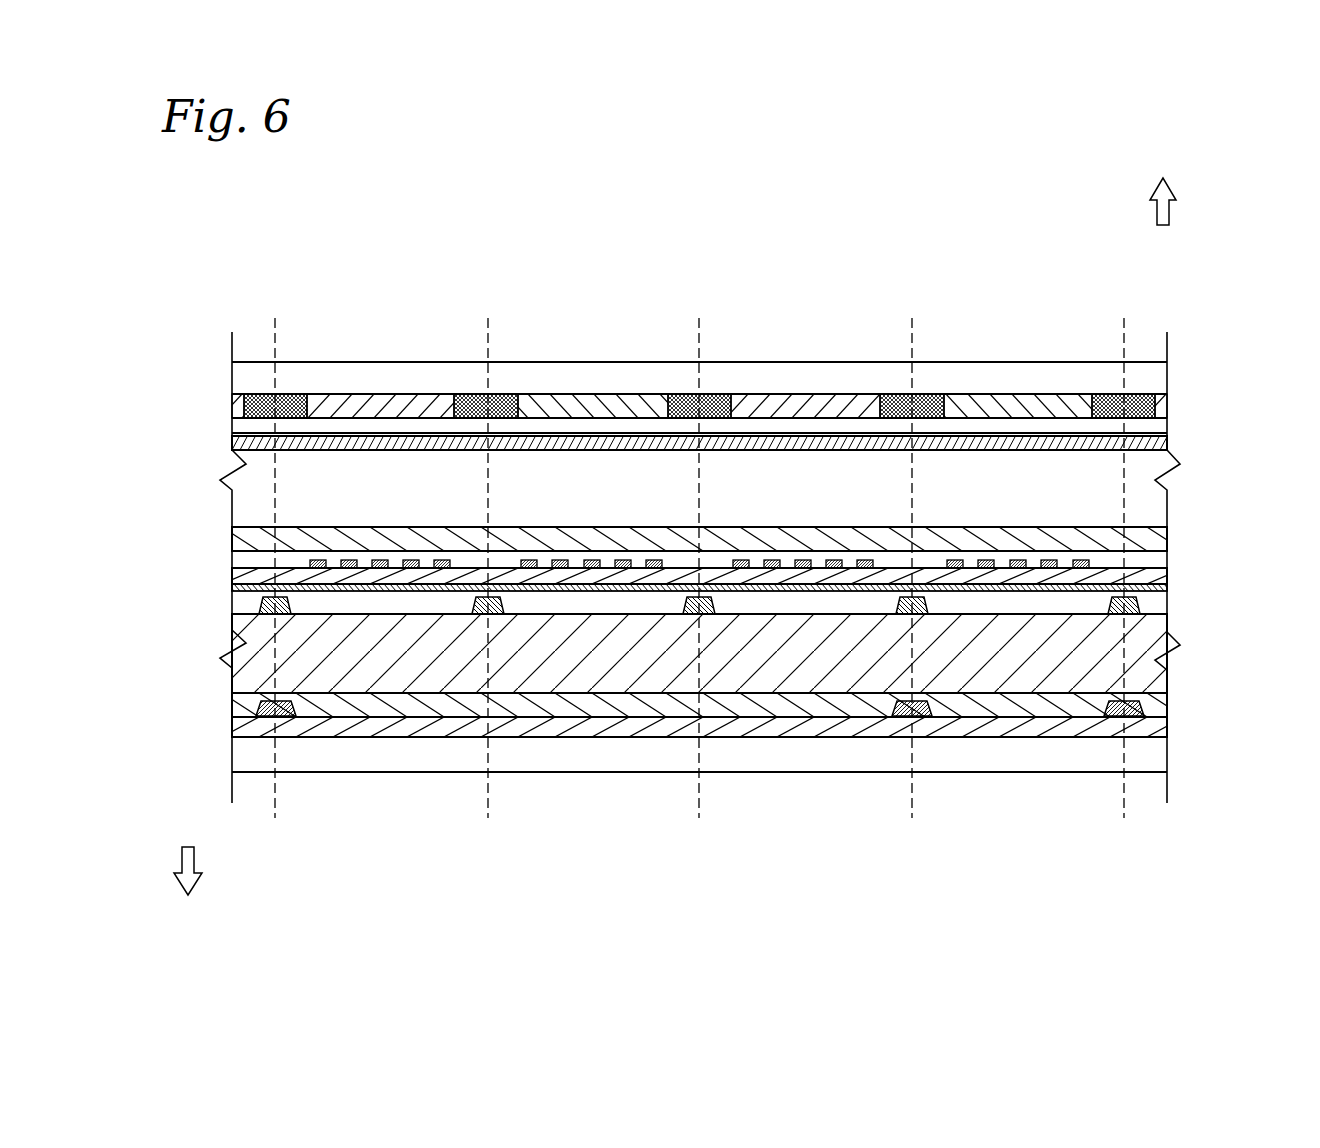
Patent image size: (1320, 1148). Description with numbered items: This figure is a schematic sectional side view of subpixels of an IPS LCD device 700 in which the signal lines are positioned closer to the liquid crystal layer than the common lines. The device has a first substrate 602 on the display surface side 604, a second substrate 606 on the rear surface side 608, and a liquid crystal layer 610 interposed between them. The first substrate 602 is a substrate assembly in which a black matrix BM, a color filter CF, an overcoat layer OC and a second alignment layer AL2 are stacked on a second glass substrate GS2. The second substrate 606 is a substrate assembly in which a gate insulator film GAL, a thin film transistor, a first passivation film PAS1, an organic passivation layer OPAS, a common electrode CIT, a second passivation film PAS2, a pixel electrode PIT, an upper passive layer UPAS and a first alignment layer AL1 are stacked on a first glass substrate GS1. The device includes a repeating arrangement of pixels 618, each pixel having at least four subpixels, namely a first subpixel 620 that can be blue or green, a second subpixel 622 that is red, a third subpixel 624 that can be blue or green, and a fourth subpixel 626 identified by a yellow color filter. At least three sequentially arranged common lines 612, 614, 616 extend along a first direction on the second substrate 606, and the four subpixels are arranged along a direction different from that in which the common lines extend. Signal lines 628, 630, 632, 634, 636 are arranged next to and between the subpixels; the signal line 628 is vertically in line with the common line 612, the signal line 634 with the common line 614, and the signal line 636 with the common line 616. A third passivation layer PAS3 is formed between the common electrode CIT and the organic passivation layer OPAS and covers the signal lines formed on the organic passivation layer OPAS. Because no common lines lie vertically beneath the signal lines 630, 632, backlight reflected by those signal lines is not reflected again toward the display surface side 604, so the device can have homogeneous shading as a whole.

The LCD device 700 is at (249, 274).
The pixel 618 is at (275, 228).
The first subpixel 620 is at (275, 293).
The second subpixel 622 is at (488, 293).
The third subpixel 624 is at (699, 293).
The fourth subpixel 626 is at (912, 293).
The display surface side 604 is at (1168, 213).
The rear surface side 608 is at (195, 852).
The first substrate 602 is at (699, 395).
The liquid crystal layer 610 is at (212, 450).
The second substrate 606 is at (706, 669).
The common line 612 is at (297, 705).
The common line 614 is at (894, 708).
The common line 616 is at (1105, 708).
The signal line 628 is at (292, 600).
The signal line 630 is at (503, 600).
The signal line 632 is at (685, 598).
The signal line 634 is at (897, 598).
The signal line 636 is at (1108, 598).
The black matrix BM is at (289, 393).
The color filter CF is at (390, 400).
The second glass substrate GS2 is at (1157, 382).
The overcoat layer OC is at (1157, 428).
The second alignment layer AL2 is at (1157, 440).
The first alignment layer AL1 is at (1150, 540).
The upper passive layer UPAS is at (1157, 561).
The pixel electrode PIT is at (325, 560).
The common electrode CIT is at (468, 582).
The second passivation film PAS2 is at (1152, 577).
The third passivation layer PAS3 is at (1157, 600).
The organic passivation layer OPAS is at (1160, 675).
The first passivation film PAS1 is at (1152, 710).
The gate insulator film GAL is at (1160, 727).
The first glass substrate GS1 is at (1160, 757).